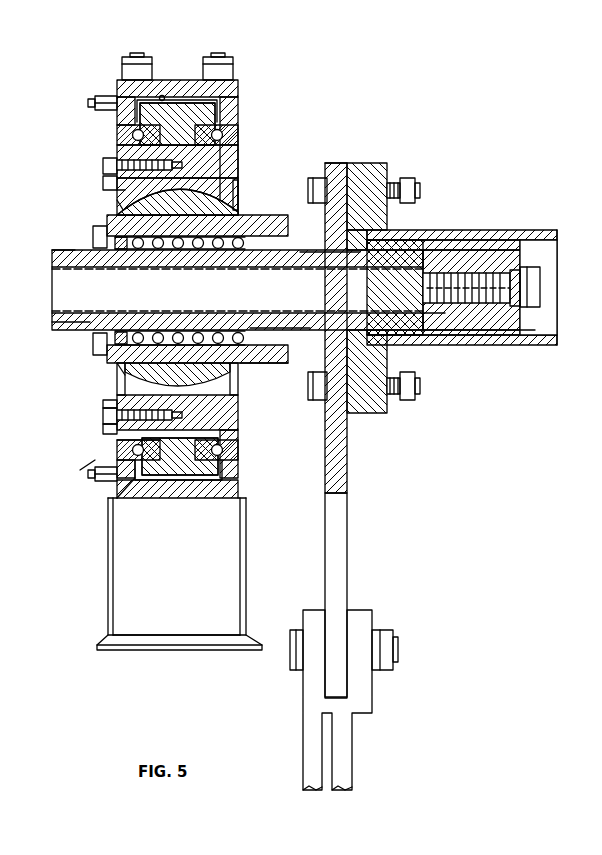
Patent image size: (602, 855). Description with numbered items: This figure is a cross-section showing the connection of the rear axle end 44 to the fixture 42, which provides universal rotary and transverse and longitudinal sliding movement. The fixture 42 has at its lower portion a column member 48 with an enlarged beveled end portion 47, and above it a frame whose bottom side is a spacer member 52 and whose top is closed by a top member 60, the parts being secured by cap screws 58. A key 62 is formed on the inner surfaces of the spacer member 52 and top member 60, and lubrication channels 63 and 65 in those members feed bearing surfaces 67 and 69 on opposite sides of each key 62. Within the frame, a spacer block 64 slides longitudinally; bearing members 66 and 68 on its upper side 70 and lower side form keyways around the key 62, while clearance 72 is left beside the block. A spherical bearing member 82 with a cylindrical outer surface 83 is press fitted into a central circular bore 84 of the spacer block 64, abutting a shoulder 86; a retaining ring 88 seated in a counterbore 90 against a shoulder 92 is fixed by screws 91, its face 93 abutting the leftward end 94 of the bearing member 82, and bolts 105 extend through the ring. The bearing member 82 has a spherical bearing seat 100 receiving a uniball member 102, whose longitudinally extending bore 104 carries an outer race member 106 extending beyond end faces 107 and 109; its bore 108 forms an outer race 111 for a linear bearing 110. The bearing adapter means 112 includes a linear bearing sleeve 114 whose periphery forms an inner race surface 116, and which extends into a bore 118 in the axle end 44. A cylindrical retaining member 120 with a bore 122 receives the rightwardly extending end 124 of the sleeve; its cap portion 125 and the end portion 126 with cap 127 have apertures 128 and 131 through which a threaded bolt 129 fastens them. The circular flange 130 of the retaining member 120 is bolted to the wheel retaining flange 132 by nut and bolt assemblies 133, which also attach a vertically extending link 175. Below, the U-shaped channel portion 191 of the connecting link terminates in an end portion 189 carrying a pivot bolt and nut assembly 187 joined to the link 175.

The fixture 42 is at (68, 478).
The rear axle end 44 is at (460, 214).
The enlarged beveled end portion 47 is at (103, 638).
The column member 48 is at (120, 560).
The spacer member 52 is at (235, 490).
The cap screws 58 is at (130, 57).
The top member 60 is at (238, 95).
The key 62 is at (215, 150).
The lubrication channel 63 is at (117, 510).
The spacer block 64 is at (238, 421).
The lubrication channel 65 is at (162, 96).
The bearing members 66 is at (133, 137).
The bearing surface 67 is at (135, 455).
The bearing members 68 is at (125, 450).
The bearing surface 69 is at (125, 133).
The upper side 70 is at (103, 162).
The clearance 72 is at (125, 442).
The spherical bearing member 82 is at (246, 193).
The cylindrical outer surface 83 is at (103, 180).
The central circular bore 84 is at (238, 182).
The shoulder 86 is at (238, 397).
The retaining ring 88 is at (103, 403).
The counterbore 90 is at (110, 430).
The screws 91 is at (103, 417).
The shoulder 92 is at (103, 414).
The face 93 is at (117, 190).
The leftward end 94 is at (117, 202).
The spherical bearing seat 100 is at (117, 380).
The uniball member 102 is at (177, 374).
The longitudinally extending bore 104 is at (107, 220).
The bolts 105 is at (93, 348).
The outer race member 106 is at (93, 233).
The end face 107 is at (112, 368).
The longitudinally extending bore 108 is at (93, 341).
The end face 109 is at (245, 364).
The linear bearing 110 is at (130, 331).
The outer race 111 is at (275, 330).
The bearing adapter means 112 is at (52, 259).
The linear bearing sleeve 114 is at (70, 322).
The inner race surface 116 is at (58, 250).
The bore 118 is at (432, 345).
The cylindrical retaining member 120 is at (496, 336).
The bore 122 is at (486, 345).
The rightwardly extending end 124 is at (352, 260).
The cap portion 125 is at (450, 330).
The end portion 126 is at (448, 230).
The cap 127 is at (522, 253).
The aperture 128 is at (540, 282).
The threaded bolt 129 is at (524, 333).
The circular flange 130 is at (360, 163).
The aperture 131 is at (430, 280).
The wheel retaining flange 132 is at (375, 163).
The nut and bolt assemblies 133 is at (408, 178).
The vertically extending link 175 is at (347, 515).
The pivot bolt and nut assembly 187 is at (290, 655).
The end portion 189 is at (303, 704).
The U-shaped channel portion 191 is at (378, 690).